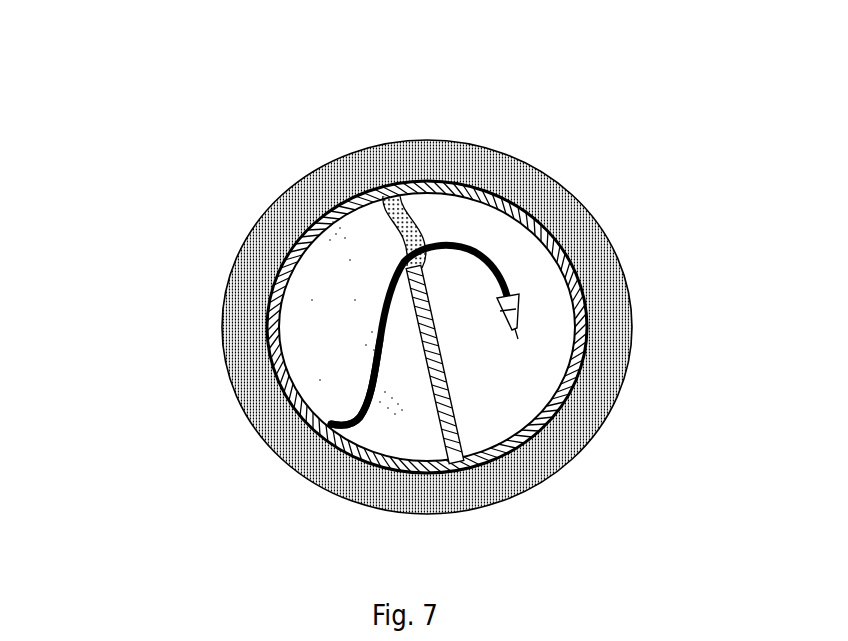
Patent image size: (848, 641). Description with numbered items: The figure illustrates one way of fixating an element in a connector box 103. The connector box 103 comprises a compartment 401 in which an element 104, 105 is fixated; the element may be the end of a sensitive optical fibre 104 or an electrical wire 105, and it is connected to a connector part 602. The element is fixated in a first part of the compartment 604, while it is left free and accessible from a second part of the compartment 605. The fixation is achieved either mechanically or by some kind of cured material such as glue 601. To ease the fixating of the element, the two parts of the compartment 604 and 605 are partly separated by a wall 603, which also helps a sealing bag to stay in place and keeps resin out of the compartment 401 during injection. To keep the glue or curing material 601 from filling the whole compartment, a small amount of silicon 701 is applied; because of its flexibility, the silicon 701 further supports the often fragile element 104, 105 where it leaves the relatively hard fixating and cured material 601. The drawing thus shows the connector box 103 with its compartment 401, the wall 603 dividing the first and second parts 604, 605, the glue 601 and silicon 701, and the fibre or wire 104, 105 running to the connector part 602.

The connector box 103 is at (310, 135).
The second part of the compartment 605 is at (505, 245).
The glue 601 is at (345, 288).
The first part of the compartment 604 is at (340, 250).
The silicon 701 is at (393, 197).
The compartment 401 is at (427, 212).
The wall 603 is at (470, 463).
The optical fibre 104 is at (358, 408).
The electrical wire 105 is at (355, 382).
The connector part 602 is at (514, 316).